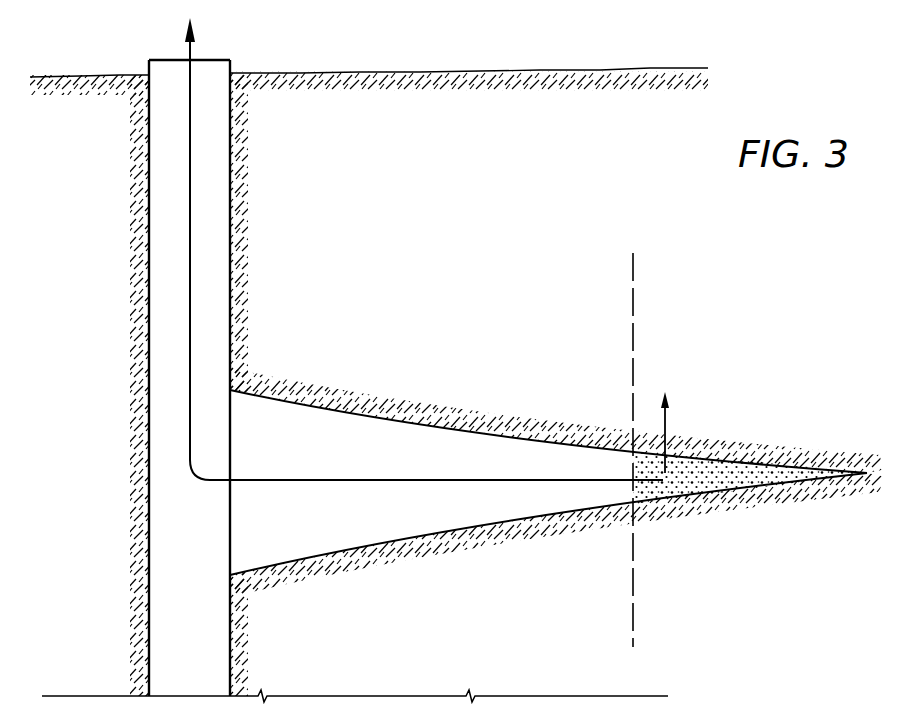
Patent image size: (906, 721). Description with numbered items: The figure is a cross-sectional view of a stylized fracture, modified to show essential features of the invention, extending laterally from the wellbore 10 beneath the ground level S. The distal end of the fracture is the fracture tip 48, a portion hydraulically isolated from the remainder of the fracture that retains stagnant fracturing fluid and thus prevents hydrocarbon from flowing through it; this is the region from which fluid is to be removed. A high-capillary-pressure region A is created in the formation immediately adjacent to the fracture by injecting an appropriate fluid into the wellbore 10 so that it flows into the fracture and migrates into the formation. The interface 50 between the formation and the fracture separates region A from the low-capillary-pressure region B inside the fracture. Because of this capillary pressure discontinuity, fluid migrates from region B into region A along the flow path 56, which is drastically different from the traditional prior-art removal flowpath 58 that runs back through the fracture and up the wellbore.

The wellbore 10 is at (147, 157).
The fracture tip 48 is at (635, 617).
The interface between the formation and the fracture 50 is at (750, 463).
The flow path 56 is at (660, 420).
The traditional flowpath of fluid removal 58 is at (194, 51).
The ground level S is at (573, 70).